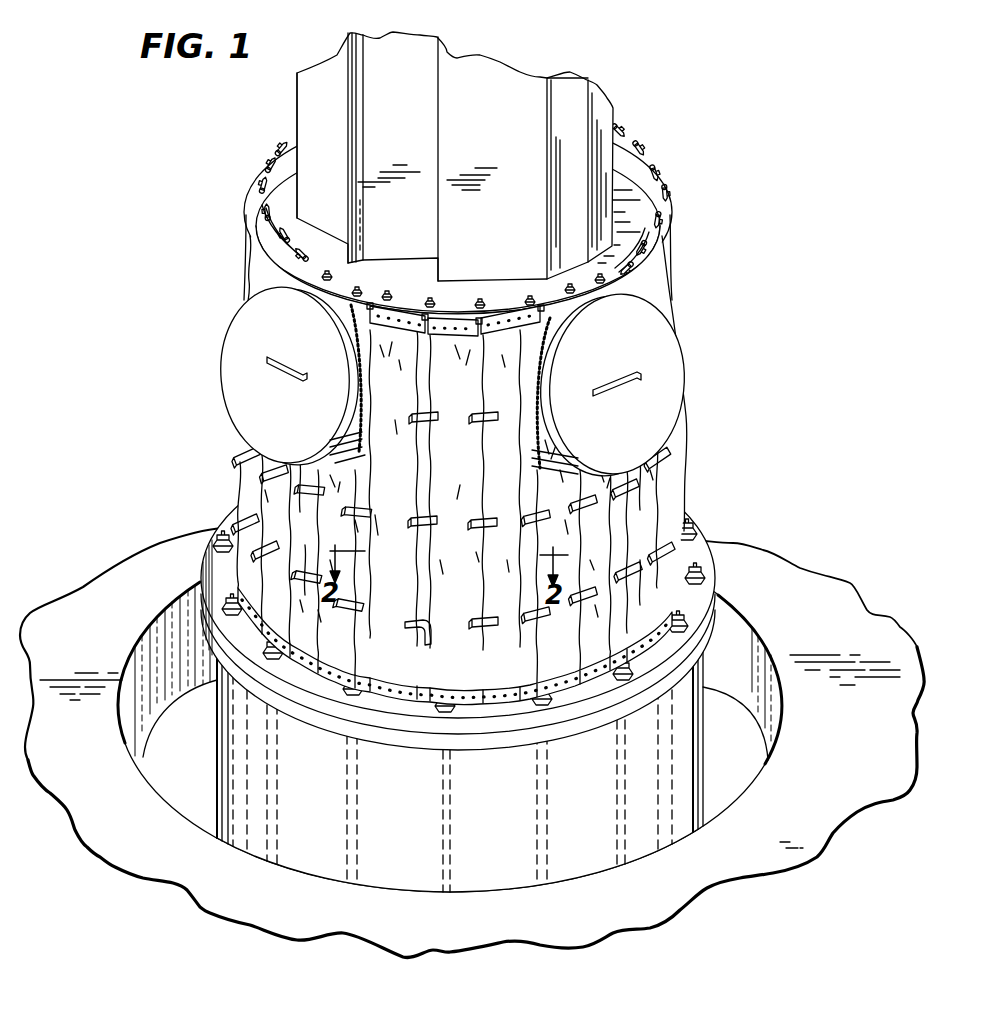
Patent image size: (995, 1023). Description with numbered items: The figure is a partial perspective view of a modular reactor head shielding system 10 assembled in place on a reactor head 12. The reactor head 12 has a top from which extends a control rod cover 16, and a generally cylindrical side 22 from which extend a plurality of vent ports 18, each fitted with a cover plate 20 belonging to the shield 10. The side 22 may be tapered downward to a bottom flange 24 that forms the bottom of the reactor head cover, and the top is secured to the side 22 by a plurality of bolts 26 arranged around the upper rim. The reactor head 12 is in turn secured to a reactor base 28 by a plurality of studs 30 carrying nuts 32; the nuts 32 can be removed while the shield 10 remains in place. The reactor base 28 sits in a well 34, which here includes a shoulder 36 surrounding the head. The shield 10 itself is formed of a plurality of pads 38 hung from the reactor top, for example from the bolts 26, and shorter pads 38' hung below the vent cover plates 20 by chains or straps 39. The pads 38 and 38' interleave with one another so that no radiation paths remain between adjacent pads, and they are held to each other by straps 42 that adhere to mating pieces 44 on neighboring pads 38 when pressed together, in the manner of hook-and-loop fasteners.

The modular reactor head shielding system 10 is at (690, 418).
The reactor head 12 is at (650, 152).
The control rod cover 16 is at (496, 144).
The vent ports 18 is at (234, 307).
The cover plate 20 is at (303, 340).
The cylindrical side 22 is at (262, 283).
The bottom flange 24 is at (694, 548).
The bolts 26 is at (262, 205).
The reactor base 28 is at (504, 846).
The studs 30 is at (350, 716).
The nuts 32 is at (704, 591).
The well 34 is at (184, 775).
The shoulder 36 is at (92, 651).
The pads 38 is at (462, 458).
The shorter pads 38' is at (460, 532).
The chains or straps 39 is at (355, 375).
The straps 42 is at (424, 530).
The mating pieces 44 is at (446, 628).